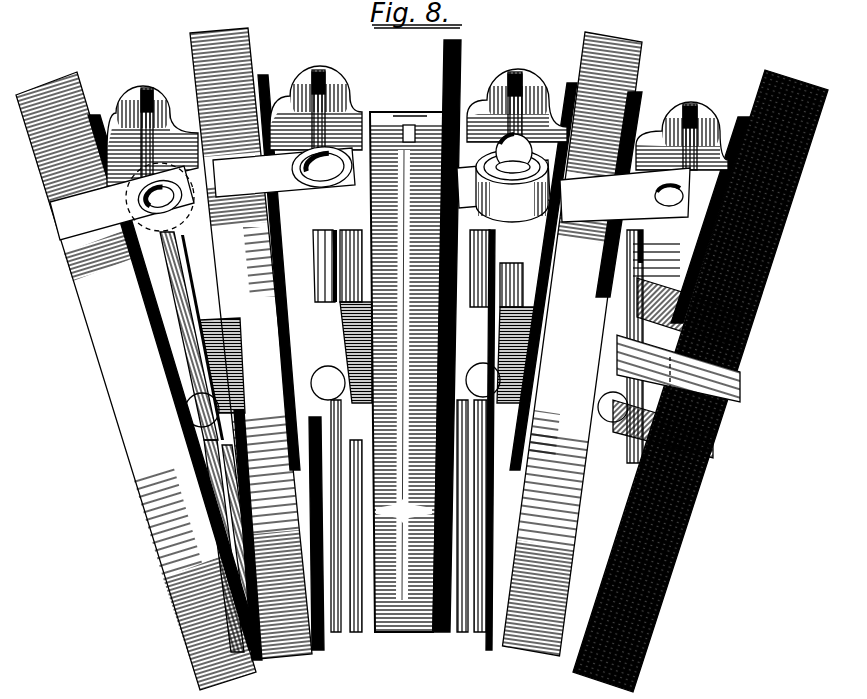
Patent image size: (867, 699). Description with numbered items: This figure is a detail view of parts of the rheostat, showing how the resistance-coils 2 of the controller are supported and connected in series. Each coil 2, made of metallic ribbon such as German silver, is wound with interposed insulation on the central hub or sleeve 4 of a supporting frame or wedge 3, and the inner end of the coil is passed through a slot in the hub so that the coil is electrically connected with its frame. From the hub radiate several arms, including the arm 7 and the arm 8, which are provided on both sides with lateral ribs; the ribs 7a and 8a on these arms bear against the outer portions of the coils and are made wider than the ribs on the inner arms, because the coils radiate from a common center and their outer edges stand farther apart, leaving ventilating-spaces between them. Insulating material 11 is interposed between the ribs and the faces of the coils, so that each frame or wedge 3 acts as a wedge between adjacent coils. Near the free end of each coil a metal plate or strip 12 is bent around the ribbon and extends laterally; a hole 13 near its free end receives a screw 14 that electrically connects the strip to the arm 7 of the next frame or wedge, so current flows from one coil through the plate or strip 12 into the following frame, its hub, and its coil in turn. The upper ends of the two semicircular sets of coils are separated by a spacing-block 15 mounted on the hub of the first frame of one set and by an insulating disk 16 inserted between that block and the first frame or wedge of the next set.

The resistance-coil 2 is at (422, 350).
The supporting frame or wedge 3 is at (417, 120).
The central hub or sleeve 4 is at (676, 368).
The radiating arm 7 is at (420, 441).
The lateral rib 7a is at (386, 328).
The radiating arm 8 is at (162, 101).
The lateral rib 8a is at (372, 104).
The insulating material 11 is at (419, 361).
The plate or strip 12 is at (370, 194).
The hole 13 is at (684, 197).
The screw 14 is at (333, 186).
The spacing-block 15 is at (407, 362).
The insulating disk 16 is at (459, 336).